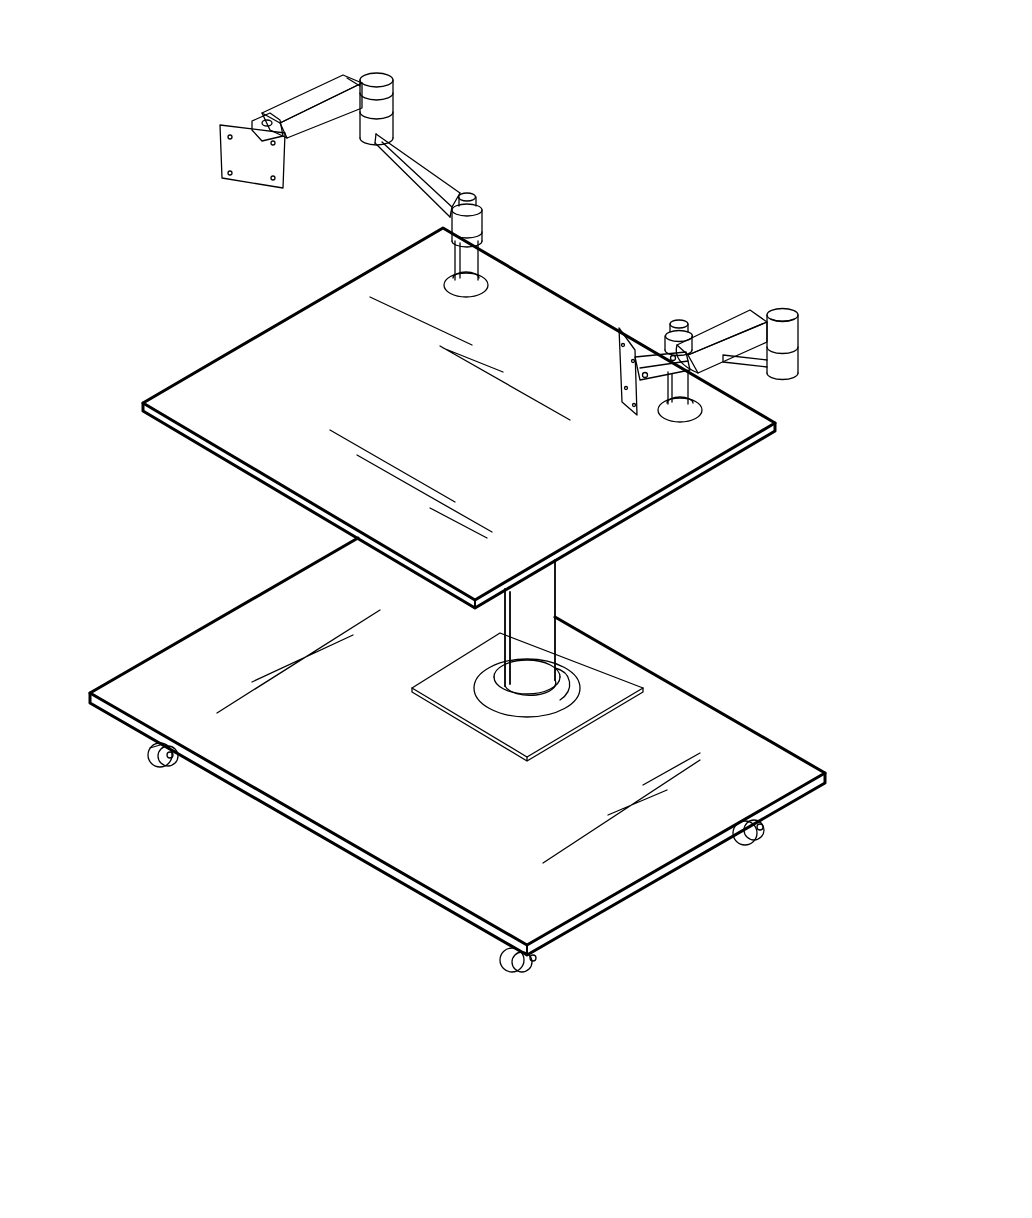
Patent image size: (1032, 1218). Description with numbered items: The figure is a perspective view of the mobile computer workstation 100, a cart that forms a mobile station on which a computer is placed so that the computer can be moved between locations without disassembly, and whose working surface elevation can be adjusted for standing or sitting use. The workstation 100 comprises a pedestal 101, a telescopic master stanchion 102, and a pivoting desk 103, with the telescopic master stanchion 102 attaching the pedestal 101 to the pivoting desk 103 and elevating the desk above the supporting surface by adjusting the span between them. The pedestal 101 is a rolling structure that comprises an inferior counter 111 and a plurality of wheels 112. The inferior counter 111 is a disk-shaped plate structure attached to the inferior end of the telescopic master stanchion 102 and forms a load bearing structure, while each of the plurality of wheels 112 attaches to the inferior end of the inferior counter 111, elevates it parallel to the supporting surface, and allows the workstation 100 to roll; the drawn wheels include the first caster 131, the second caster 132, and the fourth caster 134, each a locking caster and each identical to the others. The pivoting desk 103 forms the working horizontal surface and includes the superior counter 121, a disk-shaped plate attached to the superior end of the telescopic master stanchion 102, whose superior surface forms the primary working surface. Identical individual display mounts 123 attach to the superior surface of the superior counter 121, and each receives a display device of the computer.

The mobile computer workstation 100 is at (112, 74).
The pedestal 101 is at (800, 750).
The telescopic master stanchion 102 is at (553, 612).
The pivoting desk 103 is at (598, 318).
The inferior counter 111 is at (197, 665).
The plurality of wheels 112 is at (502, 957).
The superior counter 121 is at (780, 424).
The individual display mount 123 is at (403, 150).
The first caster 131 is at (135, 752).
The second caster 132 is at (518, 985).
The fourth caster 134 is at (765, 848).